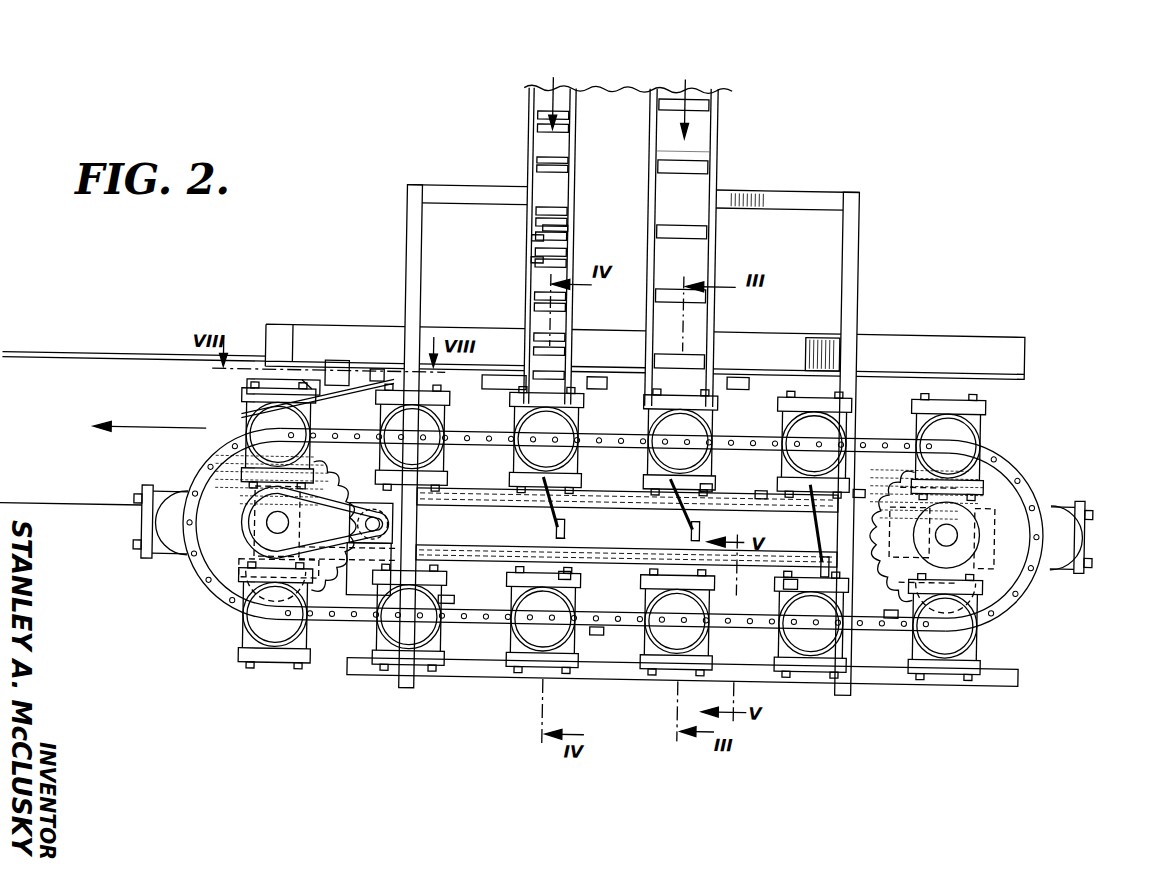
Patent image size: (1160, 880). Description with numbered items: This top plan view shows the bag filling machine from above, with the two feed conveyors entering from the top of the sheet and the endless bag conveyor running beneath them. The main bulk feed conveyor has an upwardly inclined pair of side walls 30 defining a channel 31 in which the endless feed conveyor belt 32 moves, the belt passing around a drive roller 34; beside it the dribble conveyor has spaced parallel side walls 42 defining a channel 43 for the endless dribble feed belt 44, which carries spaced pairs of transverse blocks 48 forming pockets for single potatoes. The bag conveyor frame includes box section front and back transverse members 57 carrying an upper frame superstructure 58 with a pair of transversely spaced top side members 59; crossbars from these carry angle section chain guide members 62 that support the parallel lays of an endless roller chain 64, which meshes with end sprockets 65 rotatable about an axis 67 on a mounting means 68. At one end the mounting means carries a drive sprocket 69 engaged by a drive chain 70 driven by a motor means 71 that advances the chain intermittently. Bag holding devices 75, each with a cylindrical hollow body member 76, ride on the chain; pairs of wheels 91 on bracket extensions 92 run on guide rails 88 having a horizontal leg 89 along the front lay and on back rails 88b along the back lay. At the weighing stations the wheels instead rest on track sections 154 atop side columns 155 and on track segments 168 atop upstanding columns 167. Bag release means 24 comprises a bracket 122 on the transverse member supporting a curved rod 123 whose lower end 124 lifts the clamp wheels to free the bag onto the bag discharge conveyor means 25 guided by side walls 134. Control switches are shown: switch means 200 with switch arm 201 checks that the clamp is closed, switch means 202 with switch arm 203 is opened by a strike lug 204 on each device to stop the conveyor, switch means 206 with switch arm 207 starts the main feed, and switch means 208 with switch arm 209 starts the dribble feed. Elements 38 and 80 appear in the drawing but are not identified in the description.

The side walls 30 is at (650, 114).
The channel 31 is at (706, 148).
The endless feed conveyor belt 32 is at (662, 196).
The chute cross rails 38 is at (700, 168).
The side walls 42 is at (526, 158).
The channel 43 is at (528, 240).
The dribble feed belt 44 is at (560, 240).
The transverse blocks 48 is at (532, 262).
The upper frame superstructure 58 is at (858, 226).
The top side members 59 is at (405, 235).
The transverse members 57 is at (931, 342).
The bag discharge conveyor means 25 is at (130, 370).
The drive roller 34 is at (32, 346).
The side walls 134 is at (34, 511).
The side columns 155 is at (744, 374).
The track segments 168 is at (489, 382).
The upstanding columns 167 is at (586, 374).
The back rails 88b is at (288, 384).
The bracket 122 is at (334, 364).
The lower end of rod 124 is at (374, 374).
The bag release means 24 is at (342, 397).
The curved rod 123 is at (310, 390).
The conveyor chain 80 is at (1000, 453).
The bag holding devices 75 is at (980, 430).
The cylindrical hollow metal body member 76 is at (246, 620).
The bracket extensions 92 is at (948, 400).
The wheels 91 is at (136, 498).
The drive chain 70 is at (226, 470).
The drive sprocket 69 is at (302, 526).
The motor means 71 is at (394, 524).
The axis 67 is at (940, 530).
The mounting means 68 is at (1014, 592).
The guide rails 88 is at (490, 562).
The horizontal leg 89 is at (602, 680).
The track sections 154 is at (718, 390).
The switch arm 209 is at (566, 515).
The switch means 208 is at (567, 534).
The switch means 206 is at (700, 525).
The switch arm 207 is at (688, 512).
The strike lug 204 is at (706, 484).
The switch arm 203 is at (768, 484).
The switch means 202 is at (822, 532).
The switch means 200 is at (822, 547).
The switch arm 201 is at (790, 586).
The chain guide members 62 is at (450, 602).
The roller chain 64 is at (598, 630).
The end sprockets 65 is at (893, 610).